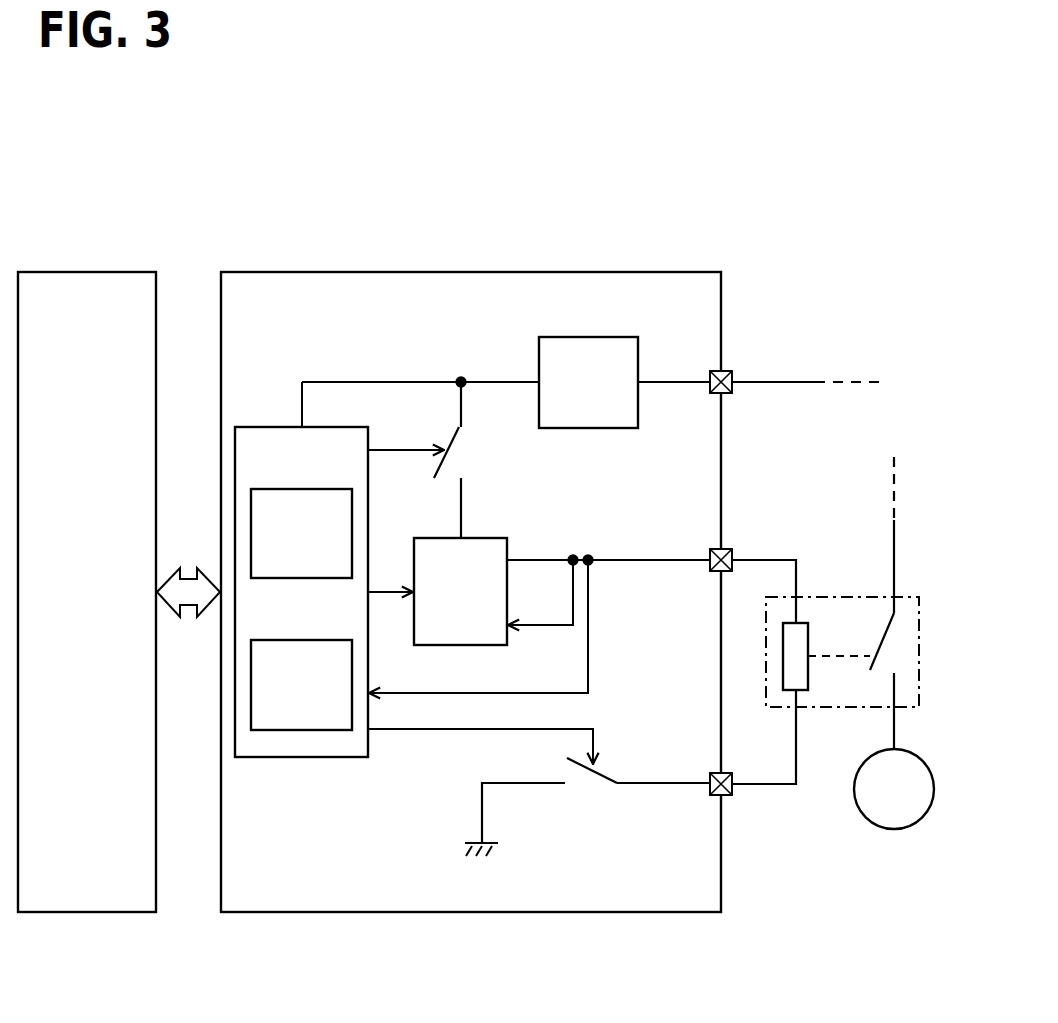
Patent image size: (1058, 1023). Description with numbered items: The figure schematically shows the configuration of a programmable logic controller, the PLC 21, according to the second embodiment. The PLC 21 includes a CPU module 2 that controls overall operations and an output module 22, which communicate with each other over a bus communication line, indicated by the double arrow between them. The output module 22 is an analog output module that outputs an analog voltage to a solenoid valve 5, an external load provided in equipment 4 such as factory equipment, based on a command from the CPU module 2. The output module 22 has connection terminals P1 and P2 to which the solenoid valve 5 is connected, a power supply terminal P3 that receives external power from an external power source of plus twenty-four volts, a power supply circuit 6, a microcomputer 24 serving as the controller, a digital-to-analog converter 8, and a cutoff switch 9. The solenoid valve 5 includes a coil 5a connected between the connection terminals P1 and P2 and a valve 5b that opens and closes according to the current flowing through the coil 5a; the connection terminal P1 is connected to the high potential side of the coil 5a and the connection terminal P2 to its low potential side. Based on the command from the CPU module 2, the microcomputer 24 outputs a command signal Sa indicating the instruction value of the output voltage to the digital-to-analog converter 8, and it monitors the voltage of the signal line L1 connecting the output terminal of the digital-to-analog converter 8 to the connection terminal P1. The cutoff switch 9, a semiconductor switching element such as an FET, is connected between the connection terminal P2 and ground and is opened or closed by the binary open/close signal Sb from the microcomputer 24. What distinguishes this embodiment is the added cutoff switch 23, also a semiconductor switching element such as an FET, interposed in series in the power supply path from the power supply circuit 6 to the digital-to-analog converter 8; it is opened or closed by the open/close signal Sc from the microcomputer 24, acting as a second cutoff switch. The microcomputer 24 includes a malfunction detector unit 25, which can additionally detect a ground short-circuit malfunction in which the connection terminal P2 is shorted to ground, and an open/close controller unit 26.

The CPU module 2 is at (83, 268).
The PLC 21 is at (471, 532).
The output module 22 is at (470, 268).
The power supply circuit 6 is at (590, 336).
The power supply terminal P3 is at (727, 369).
The microcomputer 24 is at (267, 425).
The malfunction detector unit 25 is at (285, 580).
The open/close controller unit 26 is at (318, 640).
The cutoff switch 23 is at (468, 452).
The digital-to-analog converter 8 is at (460, 645).
The signal line L1 is at (545, 556).
The cutoff switch 9 is at (585, 792).
The connection terminal P1 is at (725, 573).
The connection terminal P2 is at (725, 771).
The solenoid valve 5 is at (842, 603).
The coil 5a is at (810, 672).
The valve 5b is at (872, 640).
The equipment 4 is at (890, 830).
The command signal Sa is at (390, 579).
The open/close signal Sb is at (480, 733).
The open/close signal Sc is at (406, 439).